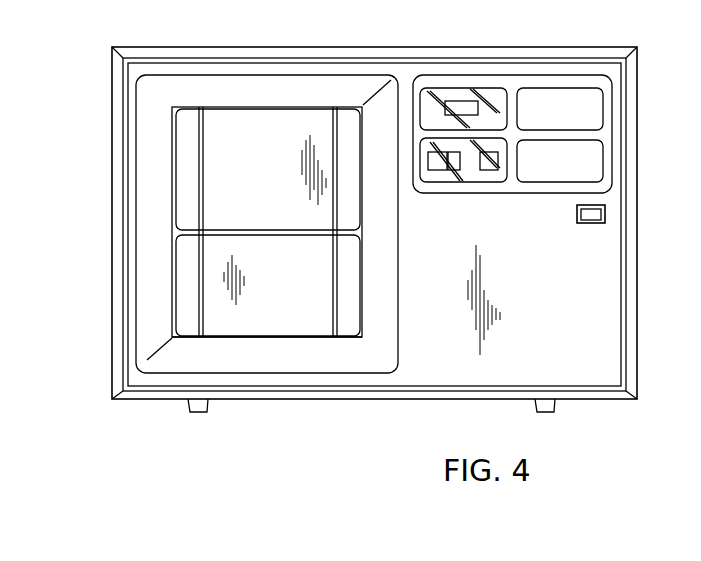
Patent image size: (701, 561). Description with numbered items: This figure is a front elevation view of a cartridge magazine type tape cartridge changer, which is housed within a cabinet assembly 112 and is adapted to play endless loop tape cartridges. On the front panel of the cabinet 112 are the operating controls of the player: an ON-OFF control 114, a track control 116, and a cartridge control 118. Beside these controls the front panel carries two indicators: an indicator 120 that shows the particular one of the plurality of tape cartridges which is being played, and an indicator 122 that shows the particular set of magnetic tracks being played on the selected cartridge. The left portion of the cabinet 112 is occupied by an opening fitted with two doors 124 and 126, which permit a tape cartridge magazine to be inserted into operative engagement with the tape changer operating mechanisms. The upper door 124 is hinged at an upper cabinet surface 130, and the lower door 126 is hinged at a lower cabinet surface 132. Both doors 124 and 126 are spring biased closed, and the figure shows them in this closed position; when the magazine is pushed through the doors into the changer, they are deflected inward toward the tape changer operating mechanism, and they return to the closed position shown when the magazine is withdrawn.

The cabinet assembly 112 is at (112, 249).
The ON-OFF control 114 is at (590, 215).
The track control 116 is at (557, 176).
The cartridge control 118 is at (576, 92).
The indicator 120 is at (483, 88).
The indicator 122 is at (467, 183).
The door 124 is at (187, 169).
The door 126 is at (184, 302).
The upper cabinet surface 130 is at (284, 104).
The lower cabinet surface 132 is at (288, 336).